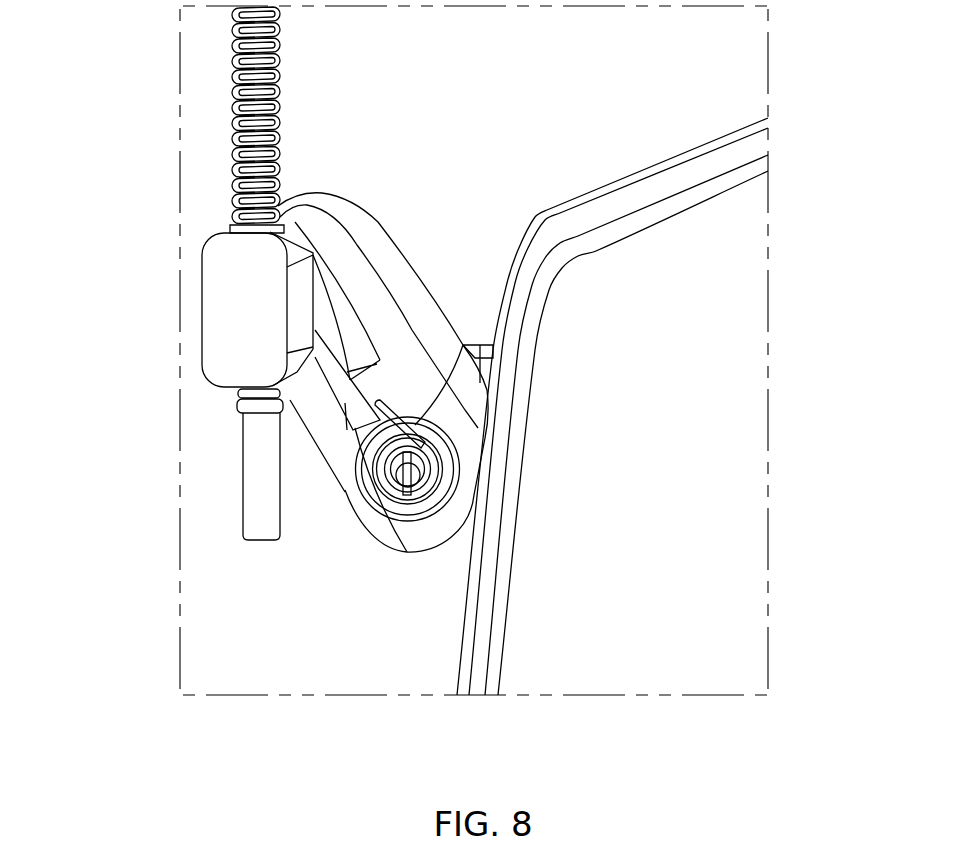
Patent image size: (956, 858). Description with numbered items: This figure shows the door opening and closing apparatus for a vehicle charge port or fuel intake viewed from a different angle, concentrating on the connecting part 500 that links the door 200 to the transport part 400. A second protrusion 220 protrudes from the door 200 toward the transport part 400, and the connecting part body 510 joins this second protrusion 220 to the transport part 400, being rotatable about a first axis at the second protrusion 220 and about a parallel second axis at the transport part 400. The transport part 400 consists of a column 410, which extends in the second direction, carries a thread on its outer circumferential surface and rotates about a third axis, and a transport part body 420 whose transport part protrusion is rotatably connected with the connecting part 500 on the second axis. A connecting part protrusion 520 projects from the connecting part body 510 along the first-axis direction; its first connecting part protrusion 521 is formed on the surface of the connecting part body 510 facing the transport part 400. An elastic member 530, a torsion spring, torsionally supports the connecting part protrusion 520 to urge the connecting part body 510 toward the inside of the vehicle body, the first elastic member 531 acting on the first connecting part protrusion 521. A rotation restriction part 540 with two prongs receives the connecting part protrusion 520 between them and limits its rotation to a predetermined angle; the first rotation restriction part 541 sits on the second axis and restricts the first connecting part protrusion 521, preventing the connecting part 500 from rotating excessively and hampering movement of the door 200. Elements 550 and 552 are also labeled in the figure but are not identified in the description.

The door 200 is at (637, 223).
The second protrusion 220 is at (476, 344).
The transport part 400 is at (190, 356).
The column 410 is at (237, 117).
The transport part body 420 is at (227, 287).
The connecting part 500 is at (414, 236).
The connecting part body 510 is at (420, 305).
The connecting part protrusion 520 is at (315, 575).
The first connecting part protrusion 521 is at (343, 402).
The elastic member 530 is at (370, 607).
The first elastic member 531 is at (345, 492).
The rotation restriction part 540 is at (367, 131).
The first rotation restriction part 541 is at (337, 275).
The hinge shaft 550 is at (428, 632).
The bearing 552 is at (422, 515).